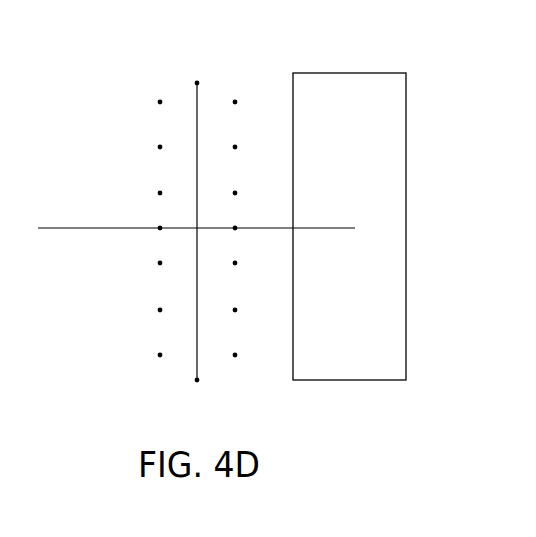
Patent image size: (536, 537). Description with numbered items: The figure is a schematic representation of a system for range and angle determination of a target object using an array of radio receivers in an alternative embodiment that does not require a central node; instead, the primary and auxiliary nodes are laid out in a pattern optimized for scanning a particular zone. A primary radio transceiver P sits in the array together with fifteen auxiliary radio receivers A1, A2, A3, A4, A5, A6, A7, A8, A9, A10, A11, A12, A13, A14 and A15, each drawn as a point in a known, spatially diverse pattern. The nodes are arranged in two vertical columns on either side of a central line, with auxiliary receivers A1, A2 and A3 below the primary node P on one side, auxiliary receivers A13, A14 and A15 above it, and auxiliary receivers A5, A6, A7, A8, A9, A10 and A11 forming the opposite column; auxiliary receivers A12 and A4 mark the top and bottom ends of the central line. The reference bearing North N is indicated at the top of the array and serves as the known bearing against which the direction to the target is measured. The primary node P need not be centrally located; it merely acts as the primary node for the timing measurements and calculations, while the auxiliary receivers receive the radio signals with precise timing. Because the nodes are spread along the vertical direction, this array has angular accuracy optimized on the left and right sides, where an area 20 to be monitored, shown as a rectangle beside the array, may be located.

The area to be monitored 20 is at (350, 73).
The North reference bearing N is at (197, 209).
The primary radio transceiver P is at (241, 238).
The auxiliary radio receiver A1 is at (250, 264).
The auxiliary radio receiver A2 is at (250, 310).
The auxiliary radio receiver A3 is at (250, 355).
The auxiliary radio receiver A4 is at (199, 395).
The auxiliary radio receiver A5 is at (146, 355).
The auxiliary radio receiver A6 is at (146, 310).
The auxiliary radio receiver A7 is at (146, 264).
The auxiliary radio receiver A8 is at (154, 239).
The auxiliary radio receiver A9 is at (143, 193).
The auxiliary radio receiver A10 is at (142, 147).
The auxiliary radio receiver A11 is at (142, 102).
The auxiliary radio receiver A12 is at (216, 77).
The auxiliary radio receiver A13 is at (253, 102).
The auxiliary radio receiver A14 is at (253, 147).
The auxiliary radio receiver A15 is at (253, 193).